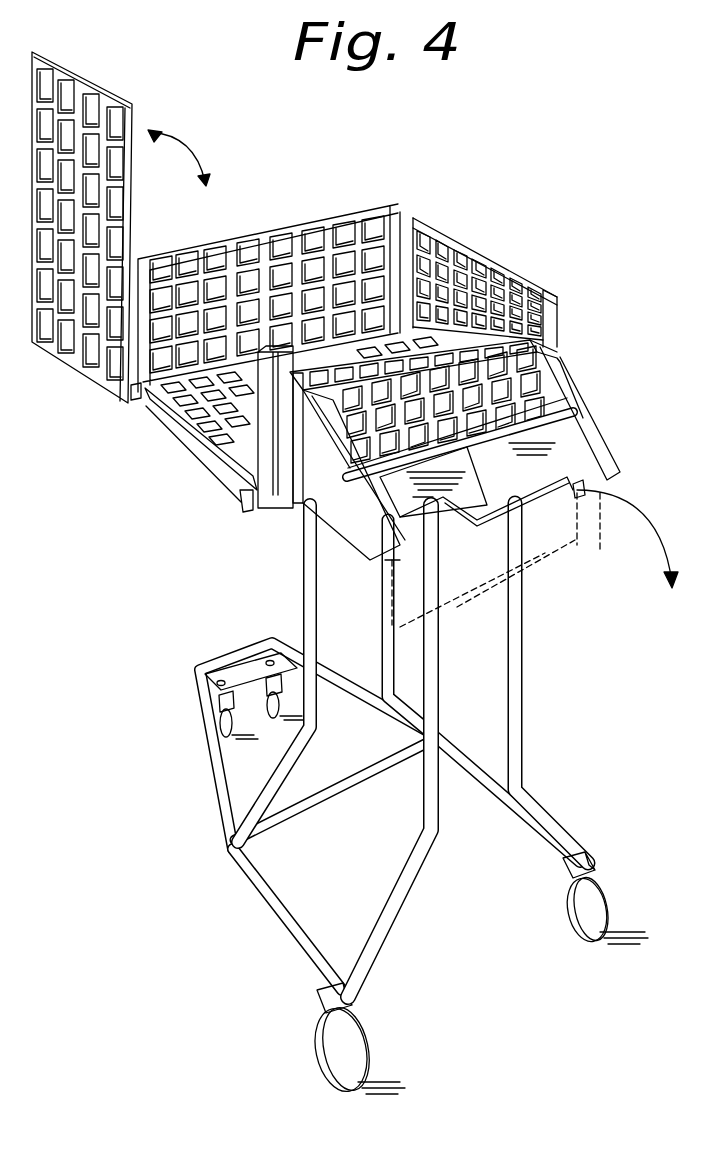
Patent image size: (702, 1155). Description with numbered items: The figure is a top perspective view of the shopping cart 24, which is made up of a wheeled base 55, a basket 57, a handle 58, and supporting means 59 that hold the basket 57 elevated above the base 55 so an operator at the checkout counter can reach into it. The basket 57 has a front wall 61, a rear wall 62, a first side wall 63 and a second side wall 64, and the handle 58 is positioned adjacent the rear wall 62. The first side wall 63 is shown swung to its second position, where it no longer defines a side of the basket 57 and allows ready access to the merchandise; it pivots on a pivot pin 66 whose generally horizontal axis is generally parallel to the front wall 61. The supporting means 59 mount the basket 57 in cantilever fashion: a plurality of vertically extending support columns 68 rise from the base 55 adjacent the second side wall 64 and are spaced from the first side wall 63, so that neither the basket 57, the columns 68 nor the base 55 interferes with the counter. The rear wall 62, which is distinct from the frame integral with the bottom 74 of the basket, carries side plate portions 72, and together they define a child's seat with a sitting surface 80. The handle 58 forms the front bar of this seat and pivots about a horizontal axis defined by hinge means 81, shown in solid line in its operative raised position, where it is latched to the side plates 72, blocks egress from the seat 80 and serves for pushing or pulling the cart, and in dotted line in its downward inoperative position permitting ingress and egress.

The shopping cart 24 is at (447, 193).
The wheeled base 55 is at (281, 916).
The basket 57 is at (580, 251).
The handle 58 is at (542, 387).
The means for supporting the basket 59 is at (528, 735).
The front wall 61 is at (246, 240).
The rear wall 62 is at (392, 357).
The first side wall 63 is at (97, 396).
The second side wall 64 is at (458, 258).
The pivot pin 66 is at (136, 402).
The vertically extending support columns 68 is at (312, 642).
The side plate portions 72 is at (574, 403).
The bottom of the basket 74 is at (558, 318).
The sitting surface 80 is at (417, 497).
The hinge means 81 is at (397, 560).